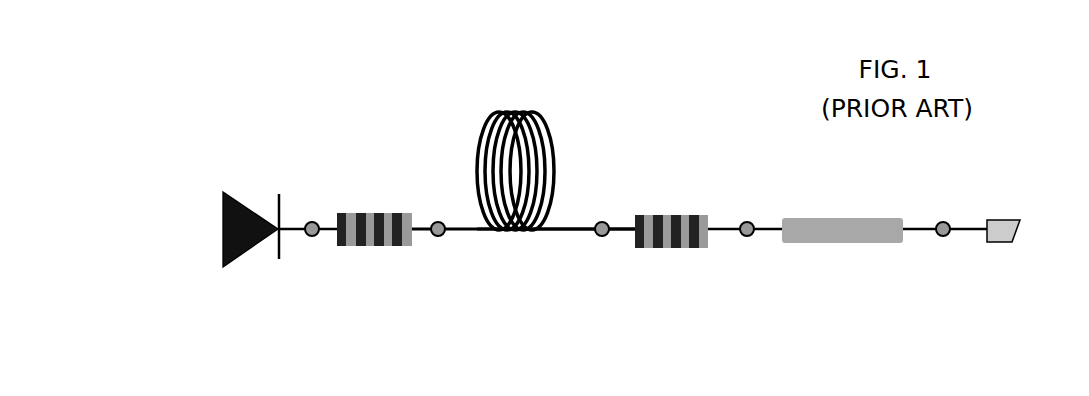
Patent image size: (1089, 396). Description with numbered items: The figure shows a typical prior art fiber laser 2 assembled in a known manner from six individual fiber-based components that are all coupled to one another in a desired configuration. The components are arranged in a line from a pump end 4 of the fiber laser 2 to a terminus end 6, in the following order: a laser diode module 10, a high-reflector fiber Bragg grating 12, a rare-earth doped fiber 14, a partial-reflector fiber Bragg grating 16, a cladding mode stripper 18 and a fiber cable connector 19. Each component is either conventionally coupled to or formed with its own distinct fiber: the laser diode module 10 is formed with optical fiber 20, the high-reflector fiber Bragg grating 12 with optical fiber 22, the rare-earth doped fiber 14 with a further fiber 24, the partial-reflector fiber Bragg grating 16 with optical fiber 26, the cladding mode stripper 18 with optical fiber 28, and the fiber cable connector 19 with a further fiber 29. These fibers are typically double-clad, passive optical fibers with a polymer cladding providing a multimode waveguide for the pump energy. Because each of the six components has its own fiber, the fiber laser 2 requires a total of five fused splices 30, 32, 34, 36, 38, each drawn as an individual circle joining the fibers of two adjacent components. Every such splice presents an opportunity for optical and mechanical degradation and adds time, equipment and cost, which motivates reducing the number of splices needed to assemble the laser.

The fiber laser 2 is at (372, 122).
The pump end 4 is at (228, 165).
The terminus end 6 is at (1013, 160).
The laser diode module 10 is at (247, 256).
The high-reflector fiber Bragg grating 12 is at (390, 247).
The rare-earth doped fiber 14 is at (540, 238).
The partial-reflector fiber Bragg grating 16 is at (685, 249).
The cladding mode stripper 18 is at (852, 244).
The fiber cable connector 19 is at (1003, 243).
The optical fiber 20 is at (290, 225).
The optical fiber 22 is at (420, 225).
The fiber 24 is at (565, 225).
The optical fiber 26 is at (717, 223).
The optical fiber 28 is at (915, 222).
The fiber 29 is at (967, 225).
The splice 30 is at (311, 238).
The splice 32 is at (438, 238).
The splice 34 is at (602, 238).
The splice 36 is at (747, 238).
The splice 38 is at (943, 238).